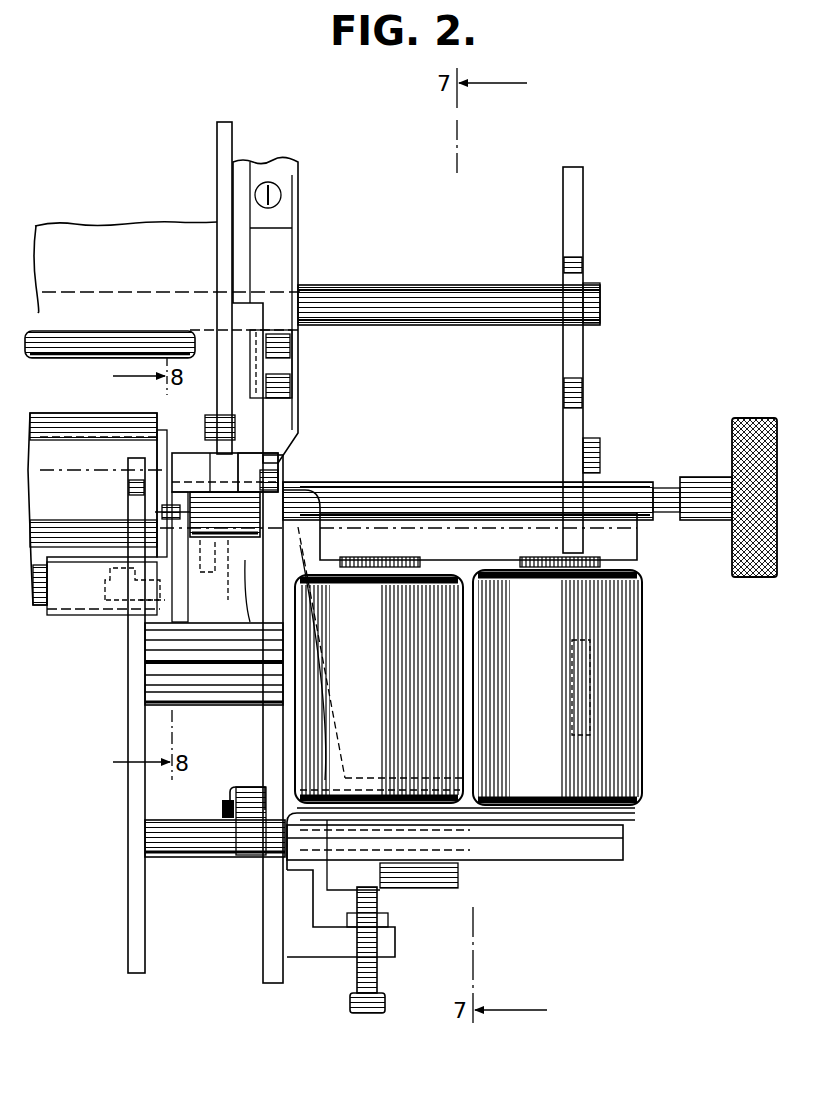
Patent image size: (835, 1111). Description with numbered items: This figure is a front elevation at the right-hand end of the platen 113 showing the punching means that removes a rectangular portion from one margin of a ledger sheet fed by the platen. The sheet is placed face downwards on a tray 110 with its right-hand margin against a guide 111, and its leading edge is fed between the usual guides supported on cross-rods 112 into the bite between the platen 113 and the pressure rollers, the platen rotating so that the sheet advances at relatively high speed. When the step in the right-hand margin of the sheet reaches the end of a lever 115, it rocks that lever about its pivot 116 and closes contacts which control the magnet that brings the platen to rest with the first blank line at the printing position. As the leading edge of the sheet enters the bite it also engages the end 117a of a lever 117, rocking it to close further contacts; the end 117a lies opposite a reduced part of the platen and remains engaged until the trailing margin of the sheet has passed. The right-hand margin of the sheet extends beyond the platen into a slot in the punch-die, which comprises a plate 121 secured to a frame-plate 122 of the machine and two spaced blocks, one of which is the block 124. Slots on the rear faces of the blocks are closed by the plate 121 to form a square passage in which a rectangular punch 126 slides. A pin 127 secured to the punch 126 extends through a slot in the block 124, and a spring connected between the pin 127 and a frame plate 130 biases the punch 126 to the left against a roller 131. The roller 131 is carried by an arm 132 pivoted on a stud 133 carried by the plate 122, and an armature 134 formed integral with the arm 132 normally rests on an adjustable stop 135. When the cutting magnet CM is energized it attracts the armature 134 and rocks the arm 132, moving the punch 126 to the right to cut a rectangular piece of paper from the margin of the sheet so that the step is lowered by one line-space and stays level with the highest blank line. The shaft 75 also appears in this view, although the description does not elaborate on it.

The shaft 75 is at (416, 492).
The tray 110 is at (137, 232).
The guide 111 is at (225, 140).
The cross-rods 112 is at (76, 343).
The platen 113 is at (36, 592).
The lever 115 is at (206, 600).
The pivot 116 is at (206, 425).
The lever 117 is at (115, 595).
The end of lever 117a is at (152, 616).
The plate 121 is at (255, 465).
The frame-plate 122 is at (273, 648).
The block 124 is at (200, 455).
The punch 126 is at (217, 560).
The pin 127 is at (178, 499).
The frame plate 130 is at (136, 488).
The roller 131 is at (245, 624).
The arm 132 is at (340, 698).
The stud 133 is at (360, 795).
The armature 134 is at (492, 852).
The adjustable stop 135 is at (378, 906).
The cutting magnet CM is at (492, 602).